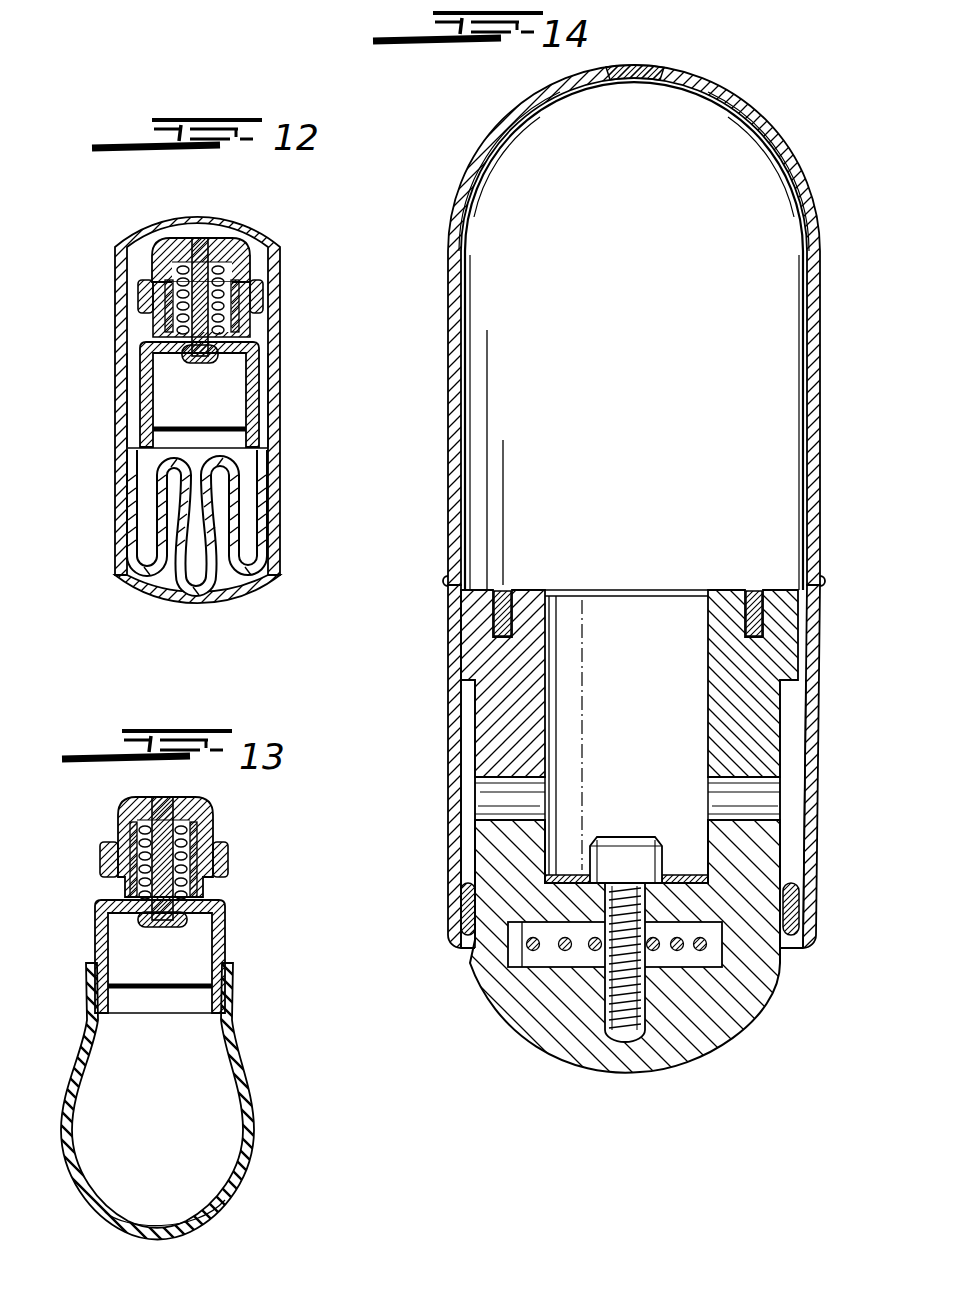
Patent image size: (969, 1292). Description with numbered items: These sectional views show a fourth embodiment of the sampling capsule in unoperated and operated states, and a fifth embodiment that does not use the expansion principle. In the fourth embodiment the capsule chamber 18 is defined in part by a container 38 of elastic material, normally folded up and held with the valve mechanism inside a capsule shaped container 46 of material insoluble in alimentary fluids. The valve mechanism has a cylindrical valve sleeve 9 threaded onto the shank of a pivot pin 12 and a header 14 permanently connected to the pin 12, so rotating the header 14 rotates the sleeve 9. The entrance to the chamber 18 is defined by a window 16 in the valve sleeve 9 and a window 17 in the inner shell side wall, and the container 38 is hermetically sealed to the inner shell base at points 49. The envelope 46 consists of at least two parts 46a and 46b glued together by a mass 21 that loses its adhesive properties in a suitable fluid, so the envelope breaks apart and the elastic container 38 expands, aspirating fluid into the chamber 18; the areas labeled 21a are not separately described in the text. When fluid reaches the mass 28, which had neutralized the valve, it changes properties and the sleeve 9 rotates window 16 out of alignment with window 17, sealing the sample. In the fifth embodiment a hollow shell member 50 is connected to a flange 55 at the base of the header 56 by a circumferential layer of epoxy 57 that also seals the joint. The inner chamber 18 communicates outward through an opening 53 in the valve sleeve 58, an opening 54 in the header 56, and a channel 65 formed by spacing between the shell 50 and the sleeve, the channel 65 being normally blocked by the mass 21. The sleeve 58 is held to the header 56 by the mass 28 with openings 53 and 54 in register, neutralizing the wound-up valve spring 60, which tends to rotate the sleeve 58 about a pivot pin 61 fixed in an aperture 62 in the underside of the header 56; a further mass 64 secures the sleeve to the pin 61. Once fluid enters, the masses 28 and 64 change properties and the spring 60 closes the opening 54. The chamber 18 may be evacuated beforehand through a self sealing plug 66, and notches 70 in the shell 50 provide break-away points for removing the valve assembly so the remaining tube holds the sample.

In FIG. 13, the valve sleeve 9 is at (234, 924).
In FIG. 12, the pivot pin 12 is at (196, 240).
In FIG. 12, the header 14 is at (238, 251).
In FIG. 12, the window 16 is at (231, 381).
In FIG. 13, the window 16 is at (108, 930).
In FIG. 12, the window 17 is at (256, 373).
In FIG. 13, the window 17 is at (226, 946).
In FIG. 14, the capsule chamber 18 is at (508, 373).
In FIG. 12, the capsule chamber 18 is at (174, 390).
In FIG. 13, the capsule chamber 18 is at (202, 1060).
In FIG. 14, the mass 21 is at (461, 936).
In FIG. 12, the annular space 21a is at (122, 377).
In FIG. 14, the mass 28 is at (505, 594).
In FIG. 12, the mass 28 is at (251, 323).
In FIG. 12, the container 38 is at (221, 586).
In FIG. 13, the container 38 is at (238, 1196).
In FIG. 12, the capsule shaped container 46 is at (212, 223).
In FIG. 12, the envelope part 46a is at (119, 296).
In FIG. 12, the envelope part 46b is at (118, 498).
In FIG. 12, the sealing points 49 is at (128, 455).
In FIG. 14, the hollow shell member 50 is at (447, 292).
In FIG. 14, the opening 53 is at (562, 794).
In FIG. 14, the opening 54 is at (482, 801).
In FIG. 14, the flange 55 is at (487, 590).
In FIG. 14, the header 56 is at (633, 1073).
In FIG. 14, the layer of epoxy 57 is at (452, 646).
In FIG. 14, the valve sleeve 58 is at (546, 686).
In FIG. 14, the valve spring 60 is at (706, 944).
In FIG. 14, the pivot pin 61 is at (656, 843).
In FIG. 14, the aperture 62 is at (617, 1036).
In FIG. 14, the mass 64 is at (568, 876).
In FIG. 14, the channel 65 is at (462, 852).
In FIG. 14, the self sealing plug 66 is at (621, 80).
In FIG. 14, the notches 70 is at (449, 581).